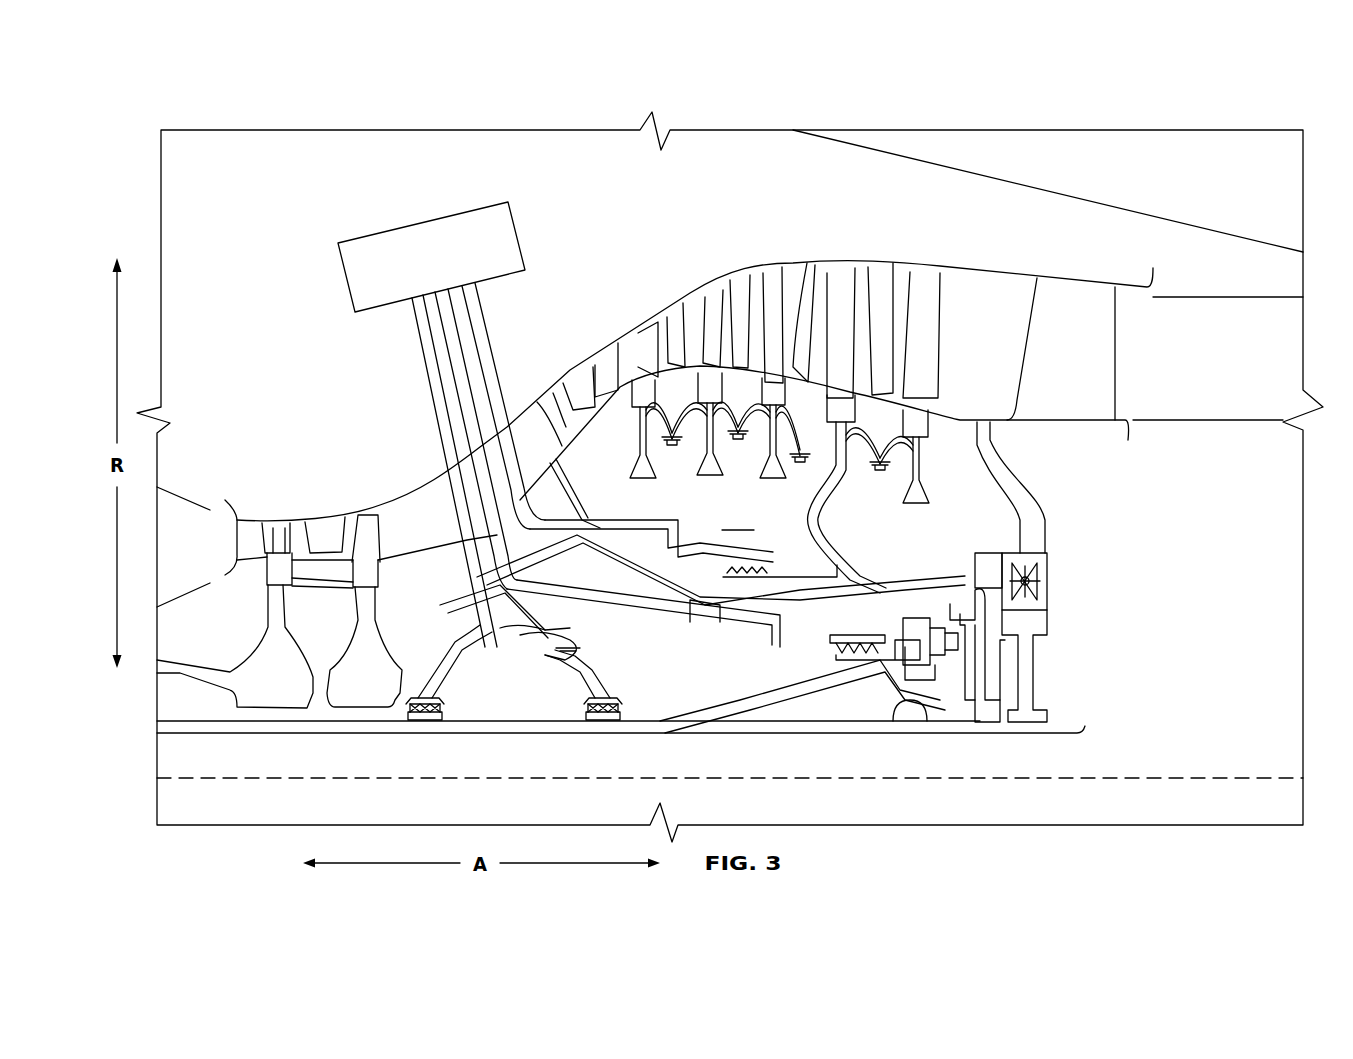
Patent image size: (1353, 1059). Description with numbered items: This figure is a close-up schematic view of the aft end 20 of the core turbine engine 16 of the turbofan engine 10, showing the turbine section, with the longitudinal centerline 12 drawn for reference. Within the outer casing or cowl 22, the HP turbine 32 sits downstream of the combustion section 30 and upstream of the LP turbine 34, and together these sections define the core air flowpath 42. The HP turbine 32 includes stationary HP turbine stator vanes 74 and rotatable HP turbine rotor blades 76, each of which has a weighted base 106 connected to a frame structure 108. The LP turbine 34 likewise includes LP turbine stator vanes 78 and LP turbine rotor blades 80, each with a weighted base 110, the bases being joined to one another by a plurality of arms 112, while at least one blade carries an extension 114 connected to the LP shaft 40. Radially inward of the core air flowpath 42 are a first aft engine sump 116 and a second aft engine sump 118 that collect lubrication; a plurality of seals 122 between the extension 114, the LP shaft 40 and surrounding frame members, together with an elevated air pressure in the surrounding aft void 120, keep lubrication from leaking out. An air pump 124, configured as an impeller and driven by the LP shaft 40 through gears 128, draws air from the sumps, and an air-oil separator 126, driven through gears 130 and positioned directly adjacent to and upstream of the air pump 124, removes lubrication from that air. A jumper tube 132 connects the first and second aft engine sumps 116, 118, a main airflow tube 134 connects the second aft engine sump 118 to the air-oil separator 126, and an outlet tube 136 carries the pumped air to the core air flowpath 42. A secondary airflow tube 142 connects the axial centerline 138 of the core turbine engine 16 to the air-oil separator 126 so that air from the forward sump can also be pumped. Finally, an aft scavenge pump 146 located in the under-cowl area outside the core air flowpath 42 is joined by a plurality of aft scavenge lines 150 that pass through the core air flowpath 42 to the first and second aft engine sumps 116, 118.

The turbofan engine 10 is at (323, 88).
The longitudinal centerline 12 is at (1268, 775).
The core turbine engine 16 is at (568, 106).
The aft end 20 is at (862, 188).
The outer casing or cowl 22 is at (945, 160).
The combustion section 30 is at (176, 512).
The high pressure (HP) turbine 32 is at (290, 452).
The low pressure (LP) turbine 34 is at (717, 213).
The low pressure (LP) shaft or spool 40 is at (528, 728).
The core air flowpath 42 is at (985, 305).
The HP turbine stator vanes 74 is at (325, 525).
The HP turbine rotor blades 76 is at (283, 535).
The LP turbine stator vanes 78 is at (675, 308).
The LP turbine rotor blades 80 is at (776, 283).
The weighted base 106 is at (272, 693).
The frame structure 108 is at (205, 677).
The weighted base 110 is at (920, 497).
The arms 112 is at (675, 455).
The extension 114 is at (826, 512).
The first aft engine sump 116 is at (500, 697).
The second aft engine sump 118 is at (745, 688).
The aft void 120 is at (683, 541).
The seals 122 is at (395, 713).
The air pump 124 is at (1047, 568).
The air-oil separator 126 is at (993, 553).
The gears 128 is at (1037, 655).
The gears 130 is at (995, 690).
The jumper tube 132 is at (573, 625).
The main airflow tube 134 is at (905, 595).
The outlet tube 136 is at (1017, 468).
The axial centerline 138 is at (287, 806).
The secondary airflow tube 142 is at (890, 700).
The aft scavenge pump 146 is at (423, 243).
The aft scavenge lines 150 is at (410, 383).